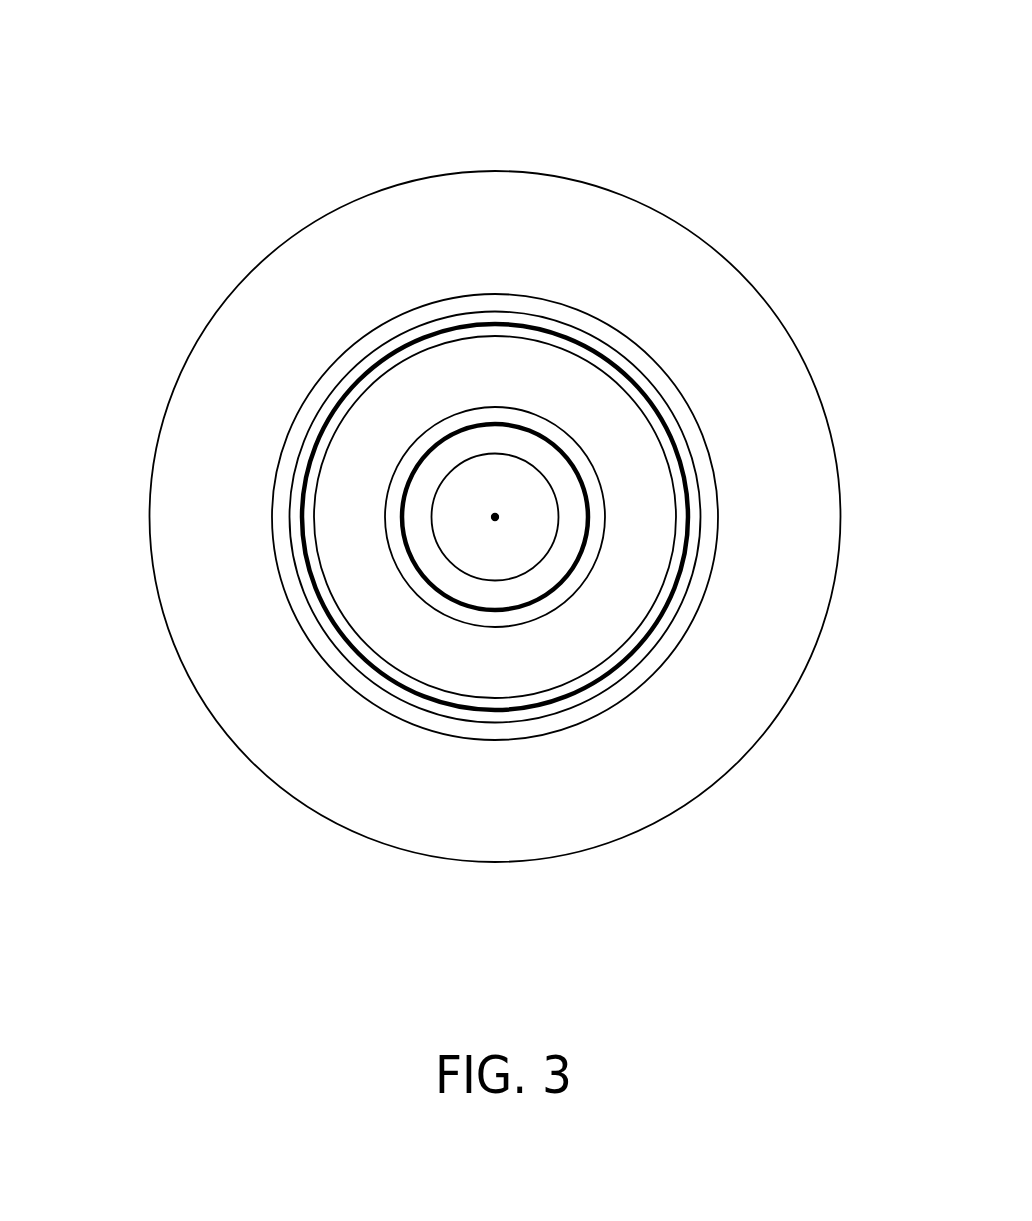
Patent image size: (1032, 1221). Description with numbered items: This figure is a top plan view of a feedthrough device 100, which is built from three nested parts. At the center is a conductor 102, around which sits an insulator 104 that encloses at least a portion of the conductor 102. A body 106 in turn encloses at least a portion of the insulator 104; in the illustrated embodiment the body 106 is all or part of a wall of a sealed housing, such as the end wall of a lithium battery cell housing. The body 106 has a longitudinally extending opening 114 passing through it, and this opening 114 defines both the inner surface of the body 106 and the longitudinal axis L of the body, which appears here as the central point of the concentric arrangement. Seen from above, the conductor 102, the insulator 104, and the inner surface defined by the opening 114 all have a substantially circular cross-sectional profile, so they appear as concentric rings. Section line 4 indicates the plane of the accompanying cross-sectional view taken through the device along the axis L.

The feedthrough device 100 is at (240, 68).
The conductor 102 is at (462, 526).
The insulator 104 is at (432, 470).
The body 106 is at (293, 300).
The opening 114 is at (445, 595).
The longitudinal axis L is at (497, 516).
The section line 4- 4 is at (572, 94).